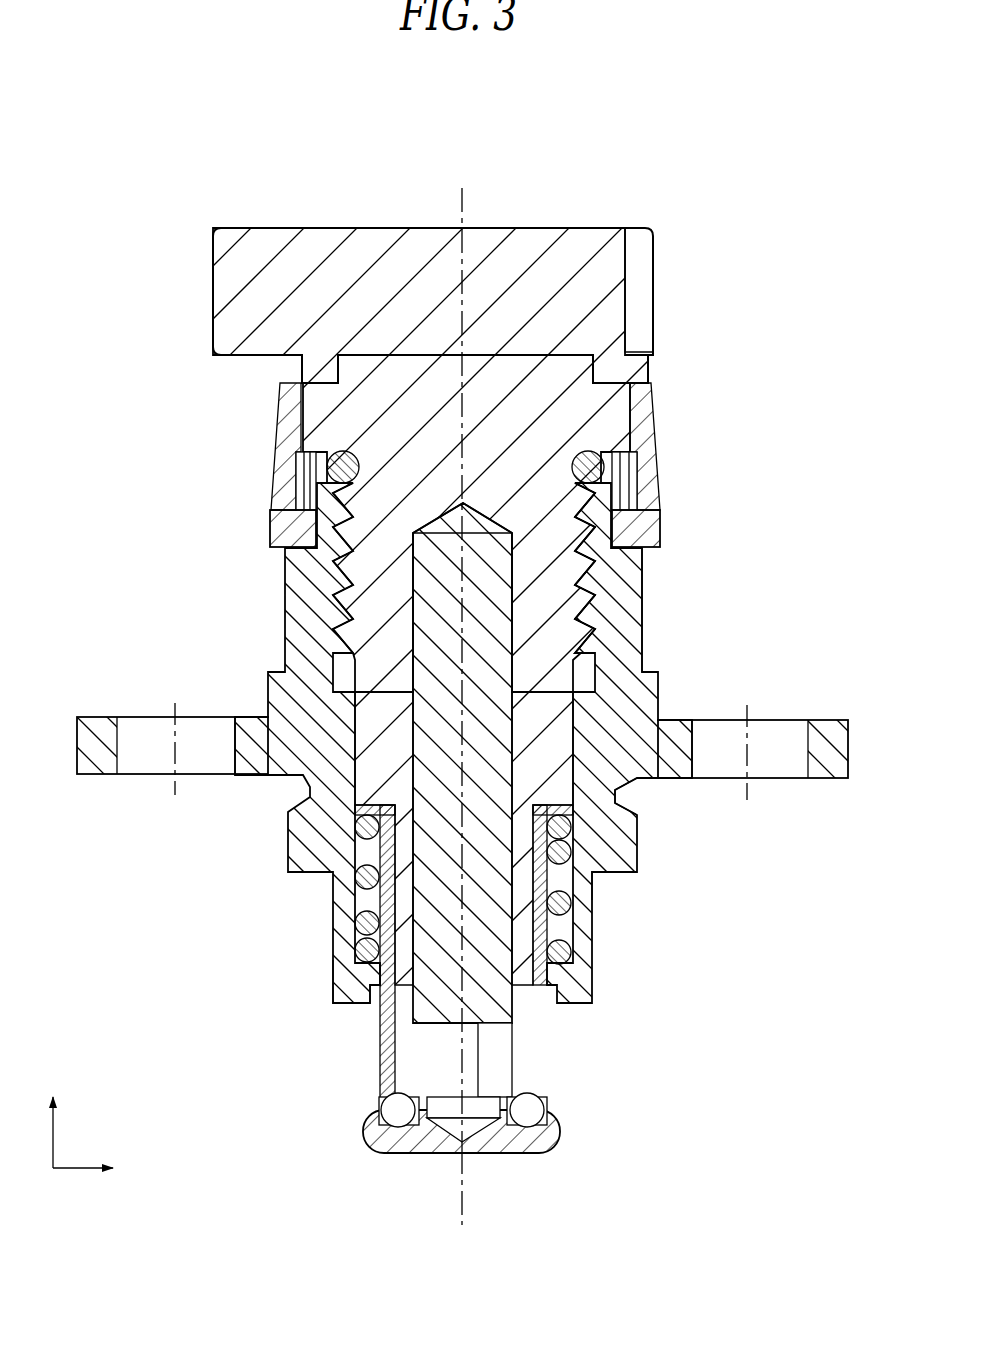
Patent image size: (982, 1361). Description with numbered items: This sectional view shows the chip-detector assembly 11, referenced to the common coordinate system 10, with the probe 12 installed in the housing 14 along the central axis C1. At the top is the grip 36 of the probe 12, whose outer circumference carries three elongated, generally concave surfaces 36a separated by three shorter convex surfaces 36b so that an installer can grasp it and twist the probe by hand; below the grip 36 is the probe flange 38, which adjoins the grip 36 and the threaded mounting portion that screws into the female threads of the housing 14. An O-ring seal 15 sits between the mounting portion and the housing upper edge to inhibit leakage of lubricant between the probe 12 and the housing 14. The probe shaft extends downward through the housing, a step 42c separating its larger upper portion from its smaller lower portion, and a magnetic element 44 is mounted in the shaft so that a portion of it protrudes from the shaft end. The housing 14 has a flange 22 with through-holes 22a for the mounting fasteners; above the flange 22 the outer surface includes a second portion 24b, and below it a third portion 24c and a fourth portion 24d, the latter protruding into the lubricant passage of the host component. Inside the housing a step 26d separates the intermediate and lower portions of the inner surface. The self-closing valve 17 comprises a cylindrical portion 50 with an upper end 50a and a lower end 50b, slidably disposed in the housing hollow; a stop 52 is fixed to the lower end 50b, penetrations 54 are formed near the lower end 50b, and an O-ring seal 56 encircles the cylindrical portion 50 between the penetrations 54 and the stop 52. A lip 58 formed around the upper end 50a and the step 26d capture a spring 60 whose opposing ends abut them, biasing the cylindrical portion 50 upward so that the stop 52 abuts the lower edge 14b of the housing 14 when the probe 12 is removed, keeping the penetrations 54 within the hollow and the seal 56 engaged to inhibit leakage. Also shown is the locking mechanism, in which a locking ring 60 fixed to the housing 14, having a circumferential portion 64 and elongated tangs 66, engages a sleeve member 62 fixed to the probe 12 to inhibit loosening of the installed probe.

The coordinate system 10 is at (70, 1168).
The chip-detector assembly 11 is at (723, 123).
The probe 12 is at (275, 190).
The housing 14 is at (232, 617).
The lower edge of the housing 14b is at (347, 1010).
The O-ring seal 15 is at (357, 460).
The self-closing valve 17 is at (415, 1163).
The flange 22 is at (78, 745).
The through-holes 22a is at (150, 730).
The second portion of the outer surface 24b is at (645, 632).
The third portion of the outer surface 24c is at (638, 832).
The fourth portion of the outer surface 24d is at (596, 937).
The step 26d is at (350, 988).
The grip 36 is at (545, 205).
The elongated surfaces 36a is at (640, 290).
The short surfaces 36b is at (213, 290).
The flange 38 is at (620, 380).
The step 42c is at (365, 804).
The magnetic element 44 is at (455, 1028).
The cylindrical portion 50 is at (363, 1052).
The upper end of the cylindrical portion 50a is at (533, 873).
The lower end of the cylindrical portion 50b is at (378, 1092).
The stop 52 is at (367, 1120).
The penetrations 54 is at (515, 1058).
The O-ring seal 56 is at (542, 1105).
The lip 58 is at (550, 812).
The spring 60 is at (262, 462).
The sleeve member 62 is at (284, 378).
The circumferential portion 64 is at (660, 523).
The elongated tangs 66 is at (657, 457).
The center axis C1 is at (462, 1185).